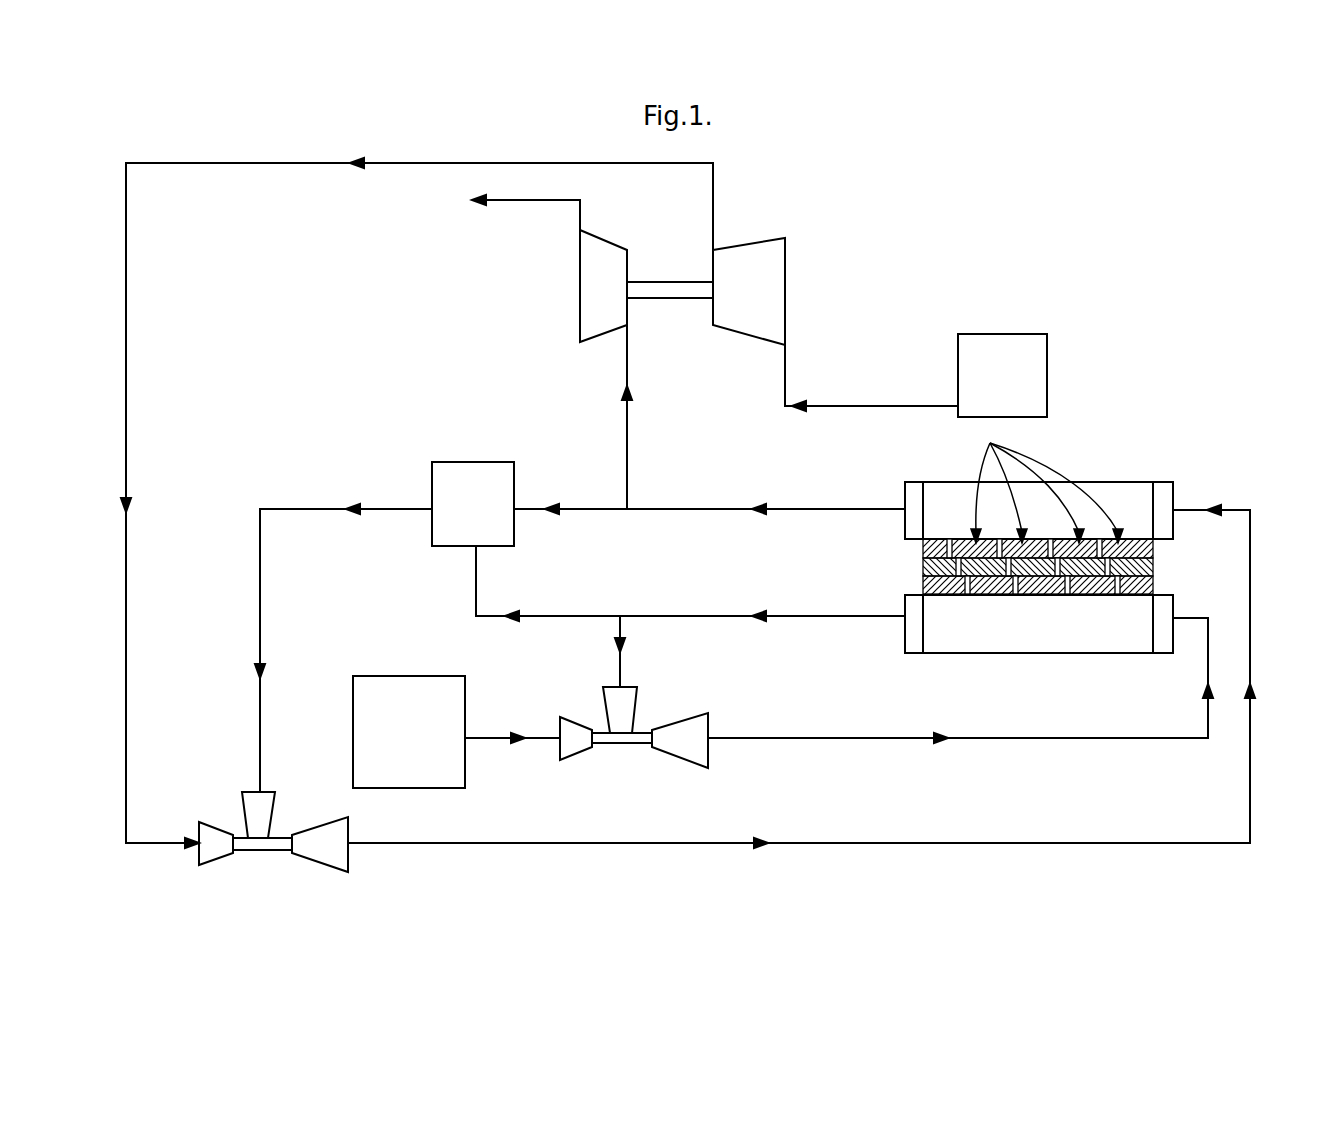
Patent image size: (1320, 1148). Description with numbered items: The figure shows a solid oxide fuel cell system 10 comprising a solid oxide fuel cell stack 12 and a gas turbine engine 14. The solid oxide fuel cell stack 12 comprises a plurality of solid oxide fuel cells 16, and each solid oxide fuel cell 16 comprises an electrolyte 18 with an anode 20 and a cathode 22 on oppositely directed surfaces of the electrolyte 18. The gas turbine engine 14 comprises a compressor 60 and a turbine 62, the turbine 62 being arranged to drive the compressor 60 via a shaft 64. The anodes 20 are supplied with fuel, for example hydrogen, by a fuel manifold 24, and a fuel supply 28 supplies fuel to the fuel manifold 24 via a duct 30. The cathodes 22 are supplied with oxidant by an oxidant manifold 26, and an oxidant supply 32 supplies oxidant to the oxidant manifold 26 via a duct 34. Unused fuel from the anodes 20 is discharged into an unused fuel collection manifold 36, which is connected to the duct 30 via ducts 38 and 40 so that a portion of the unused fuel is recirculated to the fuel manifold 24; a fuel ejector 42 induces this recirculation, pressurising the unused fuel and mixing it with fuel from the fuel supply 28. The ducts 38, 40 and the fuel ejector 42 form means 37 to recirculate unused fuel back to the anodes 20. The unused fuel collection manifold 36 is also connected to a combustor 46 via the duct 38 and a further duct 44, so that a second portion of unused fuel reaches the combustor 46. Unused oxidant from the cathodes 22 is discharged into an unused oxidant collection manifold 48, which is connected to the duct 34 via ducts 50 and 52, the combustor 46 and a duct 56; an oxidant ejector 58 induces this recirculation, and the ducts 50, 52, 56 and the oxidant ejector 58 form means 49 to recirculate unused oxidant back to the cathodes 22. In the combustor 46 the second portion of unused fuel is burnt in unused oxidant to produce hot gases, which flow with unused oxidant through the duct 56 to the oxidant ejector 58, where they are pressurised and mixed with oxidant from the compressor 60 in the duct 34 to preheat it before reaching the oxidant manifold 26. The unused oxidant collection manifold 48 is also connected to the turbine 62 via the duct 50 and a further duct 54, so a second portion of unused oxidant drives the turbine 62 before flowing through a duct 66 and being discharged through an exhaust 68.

The solid oxide fuel cell system 10 is at (1026, 300).
The solid oxide fuel cell stack 12 is at (1005, 566).
The gas turbine engine 14 is at (677, 306).
The solid oxide fuel cells 16 is at (1044, 480).
The electrolyte 18 is at (928, 567).
The anode 20 is at (928, 586).
The cathode 22 is at (928, 549).
The fuel manifold 24 is at (1164, 643).
The oxidant manifold 26 is at (1168, 496).
The fuel supply 28 is at (408, 677).
The duct 30 is at (510, 741).
The oxidant supply 32 is at (1036, 375).
The duct 34 is at (313, 165).
The unused fuel collection manifold 36 is at (911, 628).
The means to supply unused fuel 37 is at (790, 688).
The duct 38 is at (745, 618).
The duct 40 is at (623, 655).
The fuel ejector 42 is at (620, 746).
The further duct 44 is at (526, 613).
The combustor 46 is at (453, 462).
The unused oxidant collection manifold 48 is at (911, 490).
The means to supply unused oxidant 49 is at (370, 472).
The duct 50 is at (732, 511).
The duct 52 is at (578, 511).
The further duct 54 is at (630, 450).
The duct 56 is at (262, 612).
The oxidant ejector 58 is at (258, 851).
The compressor 60 is at (765, 238).
The turbine 62 is at (590, 345).
The shaft 64 is at (672, 284).
The duct 66 is at (522, 206).
The exhaust 68 is at (470, 204).